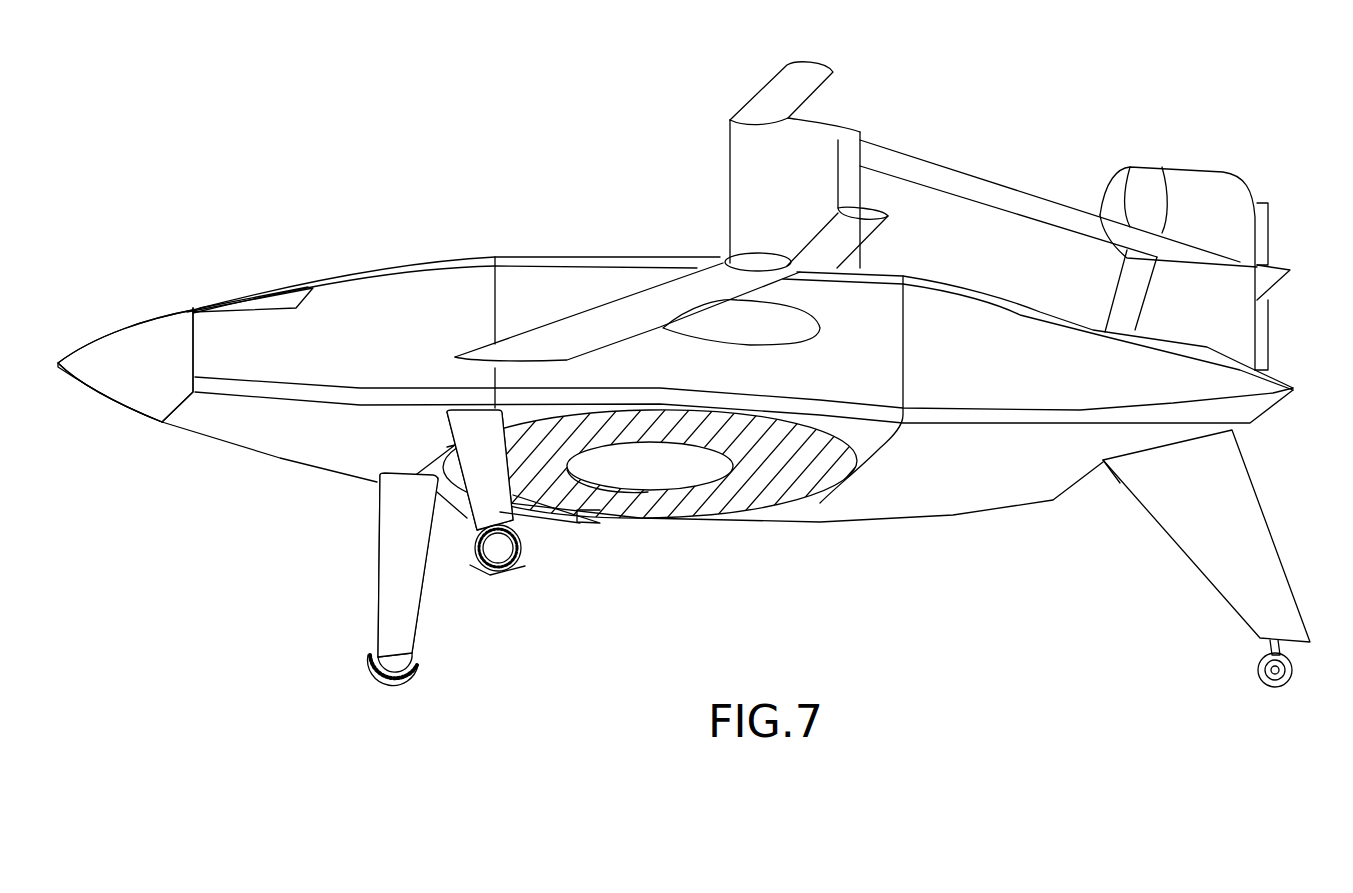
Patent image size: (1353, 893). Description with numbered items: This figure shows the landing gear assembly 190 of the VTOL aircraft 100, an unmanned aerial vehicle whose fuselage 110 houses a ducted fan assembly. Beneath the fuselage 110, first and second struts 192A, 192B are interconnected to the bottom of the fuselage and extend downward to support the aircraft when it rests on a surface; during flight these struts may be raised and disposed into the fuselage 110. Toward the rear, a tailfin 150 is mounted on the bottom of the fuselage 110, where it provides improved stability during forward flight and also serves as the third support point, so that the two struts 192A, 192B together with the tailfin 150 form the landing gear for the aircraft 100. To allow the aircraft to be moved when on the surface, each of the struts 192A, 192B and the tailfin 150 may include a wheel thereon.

The aircraft 100 is at (675, 301).
The fuselage 110 is at (213, 328).
The tailfin 150 is at (1270, 590).
The landing gear assembly 190 is at (357, 500).
The first strut 192A is at (507, 513).
The second strut 192B is at (392, 597).